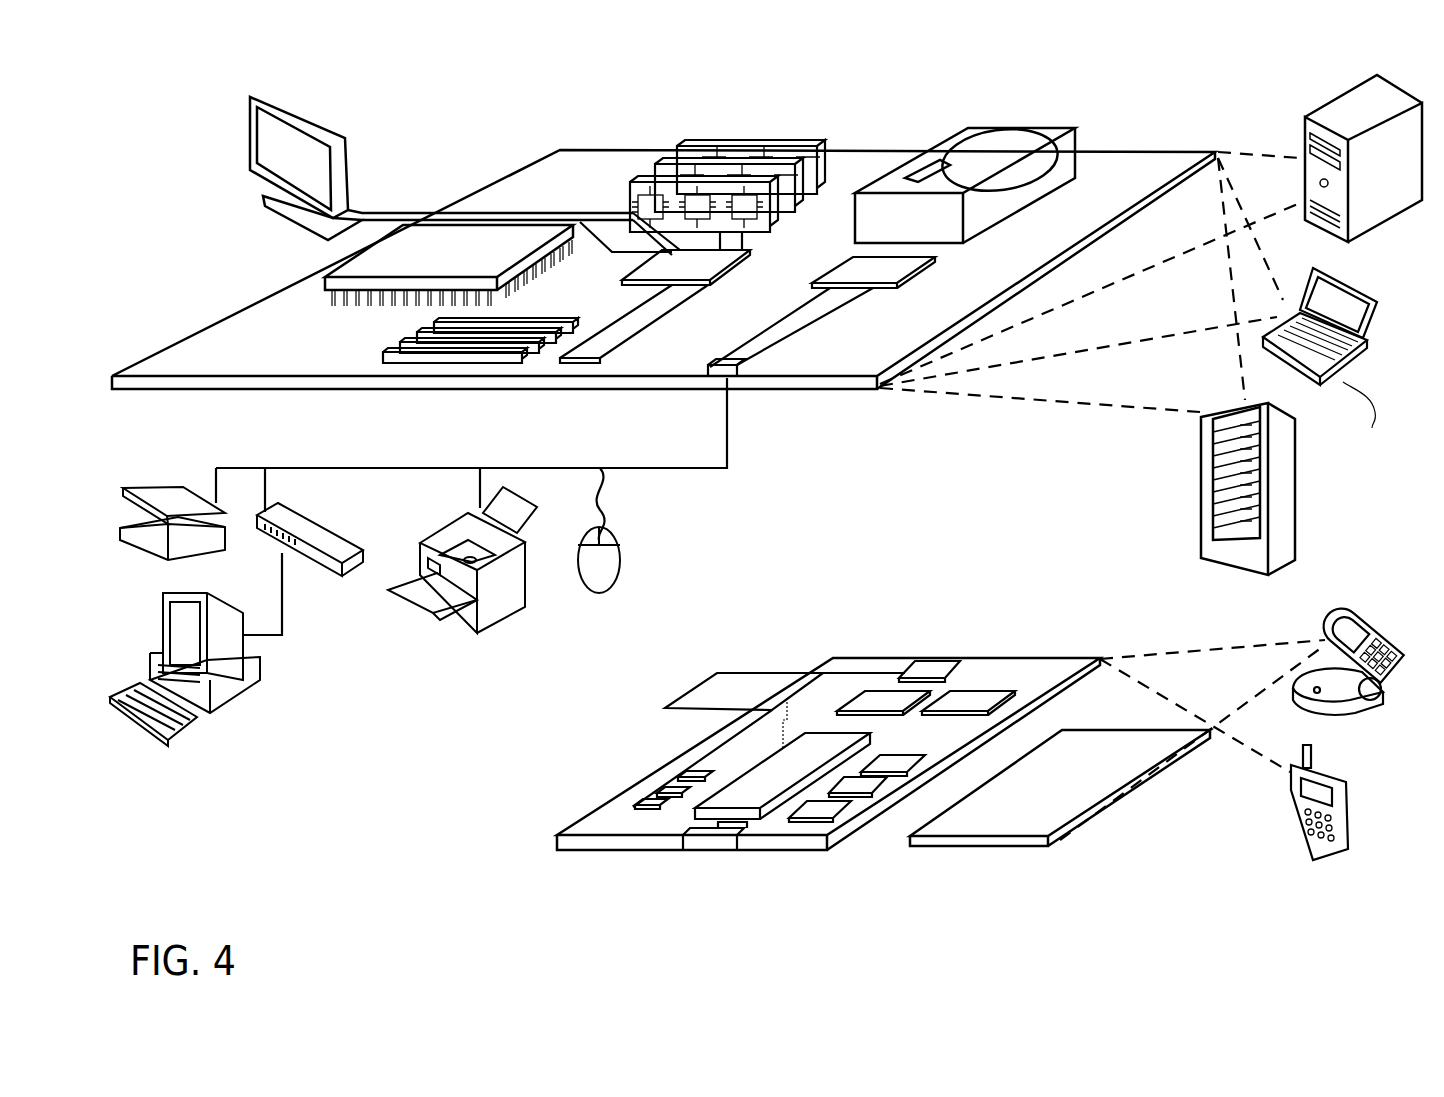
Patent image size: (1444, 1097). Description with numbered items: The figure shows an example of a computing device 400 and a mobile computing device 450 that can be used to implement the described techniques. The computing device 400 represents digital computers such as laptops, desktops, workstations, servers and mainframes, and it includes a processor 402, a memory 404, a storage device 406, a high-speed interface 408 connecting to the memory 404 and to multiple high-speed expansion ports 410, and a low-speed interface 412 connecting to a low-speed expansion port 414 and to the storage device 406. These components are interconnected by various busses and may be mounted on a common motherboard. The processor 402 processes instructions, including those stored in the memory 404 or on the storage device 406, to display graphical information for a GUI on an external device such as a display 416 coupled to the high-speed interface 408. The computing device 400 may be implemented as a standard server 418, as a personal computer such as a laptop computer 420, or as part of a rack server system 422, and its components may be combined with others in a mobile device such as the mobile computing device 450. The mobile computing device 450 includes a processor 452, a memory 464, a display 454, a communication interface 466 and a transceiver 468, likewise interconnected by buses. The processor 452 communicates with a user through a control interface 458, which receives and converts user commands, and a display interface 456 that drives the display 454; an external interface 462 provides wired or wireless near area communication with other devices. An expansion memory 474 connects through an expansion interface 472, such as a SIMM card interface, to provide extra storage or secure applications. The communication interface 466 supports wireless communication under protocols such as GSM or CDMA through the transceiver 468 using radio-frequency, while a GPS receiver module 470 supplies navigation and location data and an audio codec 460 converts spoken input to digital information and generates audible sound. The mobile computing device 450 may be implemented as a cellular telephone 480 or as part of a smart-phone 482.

The computing device 400 is at (473, 111).
The processor 402 is at (323, 280).
The memory 404 is at (689, 147).
The storage device 406 is at (952, 138).
The high-speed interface 408 is at (656, 262).
The high-speed expansion ports 410 is at (395, 345).
The low-speed interface 412 is at (843, 262).
The low-speed expansion port 414 is at (740, 380).
The display 416 is at (248, 97).
The standard server 418 is at (1303, 131).
The laptop computer 420 is at (1341, 356).
The rack server system 422 is at (1201, 513).
The mobile computing device 450 is at (527, 851).
The processor 452 is at (748, 800).
The display 454 is at (1029, 832).
The display interface 456 is at (828, 810).
The control interface 458 is at (858, 782).
The audio codec 460 is at (893, 762).
The external interface 462 is at (708, 845).
The memory 464 is at (648, 790).
The communication interface 466 is at (880, 700).
The transceiver 468 is at (968, 700).
The GPS receiver module 470 is at (936, 665).
The expansion interface 472 is at (812, 668).
The expansion memory 474 is at (713, 675).
The cellular telephone 480 is at (1348, 607).
The smart-phone 482 is at (1290, 812).